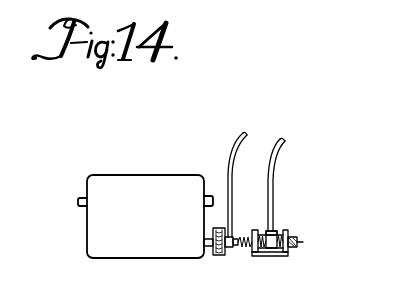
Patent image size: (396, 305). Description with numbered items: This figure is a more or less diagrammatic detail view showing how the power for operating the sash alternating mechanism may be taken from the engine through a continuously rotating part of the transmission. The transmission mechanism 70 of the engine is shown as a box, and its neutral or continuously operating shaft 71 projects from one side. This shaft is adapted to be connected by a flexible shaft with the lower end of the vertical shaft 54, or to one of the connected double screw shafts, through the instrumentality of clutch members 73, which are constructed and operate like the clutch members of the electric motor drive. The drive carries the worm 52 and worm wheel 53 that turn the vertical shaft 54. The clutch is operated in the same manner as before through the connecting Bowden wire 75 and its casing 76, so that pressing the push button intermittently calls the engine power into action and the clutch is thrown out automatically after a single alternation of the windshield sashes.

The transmission mechanism 70 is at (123, 257).
The neutral or continuously operating shaft 71 is at (204, 247).
The clutch members 73 is at (213, 256).
The worm 52 is at (265, 256).
The worm wheel 53 is at (305, 242).
The vertical shaft 54 is at (276, 229).
The Bowden wire 75 is at (247, 132).
The casing 76 is at (238, 147).